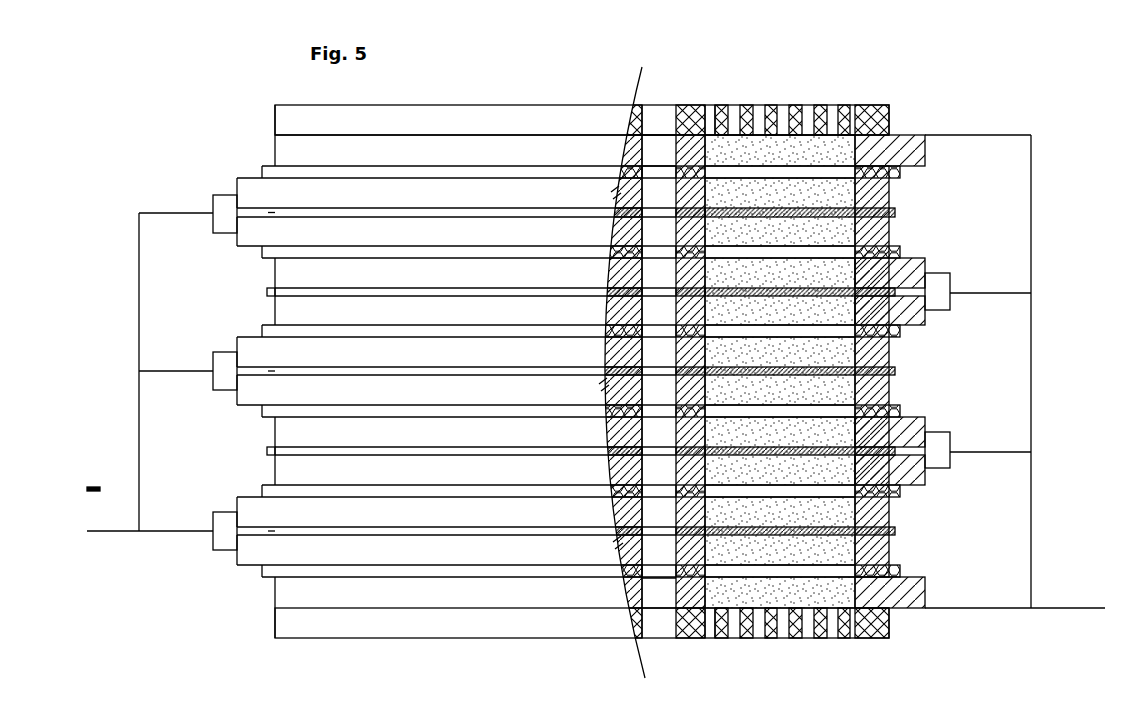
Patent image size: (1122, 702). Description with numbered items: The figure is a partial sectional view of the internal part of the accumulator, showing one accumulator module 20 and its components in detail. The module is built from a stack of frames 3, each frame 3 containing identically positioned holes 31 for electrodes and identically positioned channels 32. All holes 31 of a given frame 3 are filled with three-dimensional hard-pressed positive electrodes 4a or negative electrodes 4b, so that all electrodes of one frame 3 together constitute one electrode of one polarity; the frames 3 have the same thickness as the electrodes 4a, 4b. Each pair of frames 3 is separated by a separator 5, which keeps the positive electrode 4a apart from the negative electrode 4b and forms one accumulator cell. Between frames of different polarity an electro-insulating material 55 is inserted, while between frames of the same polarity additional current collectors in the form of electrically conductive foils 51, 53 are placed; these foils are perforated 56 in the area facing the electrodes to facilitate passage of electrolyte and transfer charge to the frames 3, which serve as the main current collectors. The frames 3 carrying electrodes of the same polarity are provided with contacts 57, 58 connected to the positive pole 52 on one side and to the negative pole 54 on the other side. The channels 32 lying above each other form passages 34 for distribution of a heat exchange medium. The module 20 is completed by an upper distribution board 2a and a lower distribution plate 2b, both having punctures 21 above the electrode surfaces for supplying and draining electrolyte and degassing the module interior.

The upper distribution board 2a is at (889, 107).
The lower distribution plate 2b is at (890, 630).
The frame 3 is at (925, 150).
The positive electrode 4a is at (833, 152).
The negative electrode 4b is at (838, 188).
The separator 5 is at (880, 284).
The accumulator module 20 is at (890, 508).
The punctures 21 is at (808, 112).
The holes for electrodes 31 is at (753, 137).
The channels 32 is at (643, 592).
The passages 34 is at (652, 147).
The electrically conductive foil 51 is at (857, 294).
The positive pole 52 is at (1031, 393).
The electrically conductive foil 53 is at (893, 370).
The negative pole 54 is at (139, 305).
The electro-insulating material 55 is at (900, 250).
The perforation 56 is at (926, 418).
The contact 57 is at (950, 468).
The contact 58 is at (950, 440).